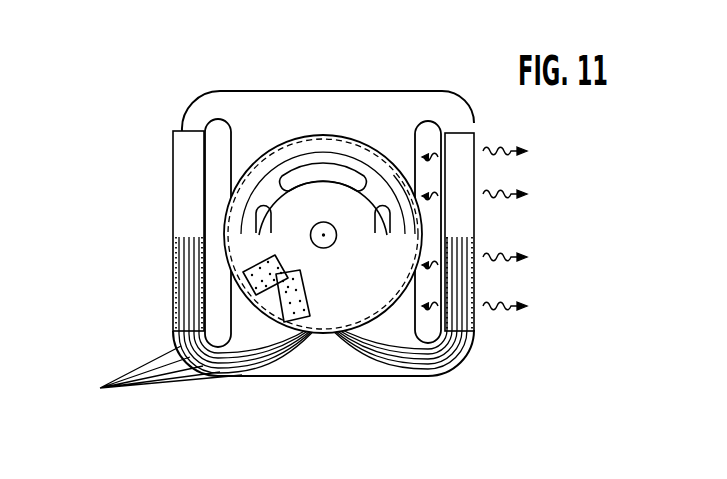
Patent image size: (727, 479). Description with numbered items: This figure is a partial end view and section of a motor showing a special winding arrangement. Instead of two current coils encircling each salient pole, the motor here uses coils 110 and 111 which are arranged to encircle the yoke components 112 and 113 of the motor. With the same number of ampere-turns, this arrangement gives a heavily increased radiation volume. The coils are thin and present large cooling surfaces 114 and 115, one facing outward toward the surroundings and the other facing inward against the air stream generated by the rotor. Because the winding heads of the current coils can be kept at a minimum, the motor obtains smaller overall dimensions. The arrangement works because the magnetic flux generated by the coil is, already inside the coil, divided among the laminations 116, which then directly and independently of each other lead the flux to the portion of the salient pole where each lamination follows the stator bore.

The coil 110 is at (189, 176).
The coil 111 is at (462, 179).
The yoke component 112 is at (188, 274).
The yoke component 113 is at (458, 276).
The cooling surface 114 is at (441, 171).
The cooling surface 115 is at (478, 228).
The laminations 116 is at (152, 383).